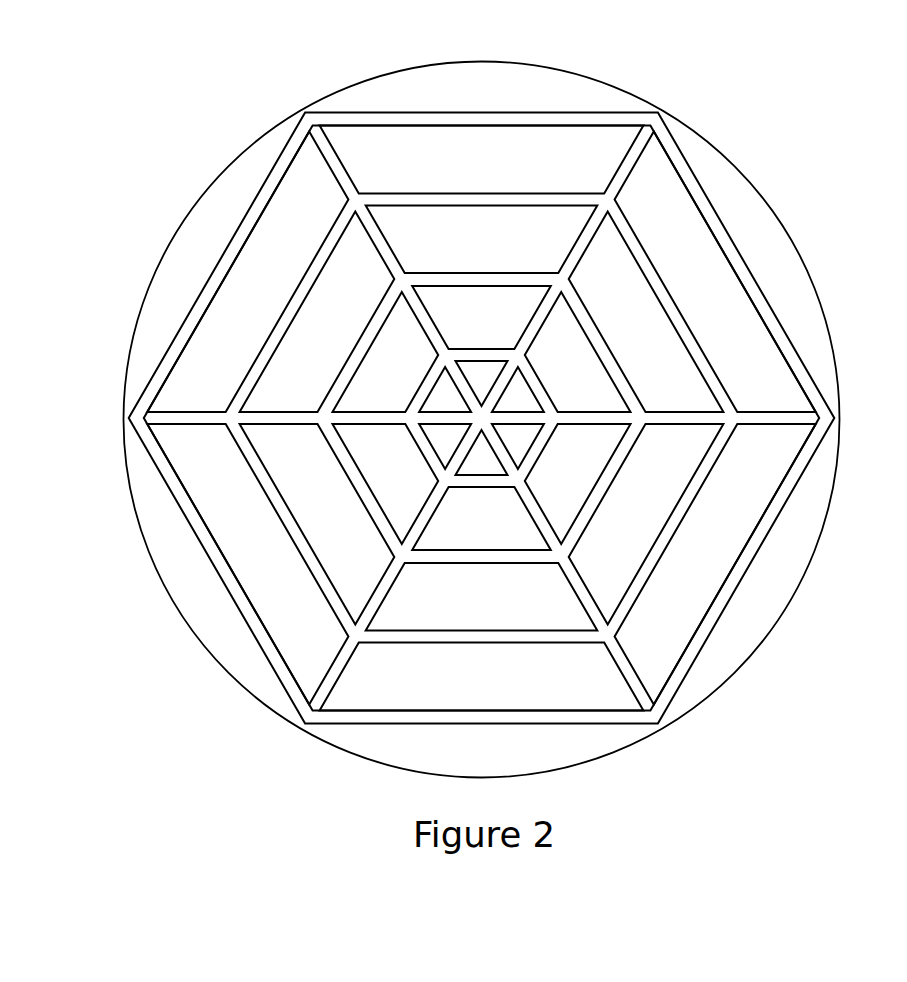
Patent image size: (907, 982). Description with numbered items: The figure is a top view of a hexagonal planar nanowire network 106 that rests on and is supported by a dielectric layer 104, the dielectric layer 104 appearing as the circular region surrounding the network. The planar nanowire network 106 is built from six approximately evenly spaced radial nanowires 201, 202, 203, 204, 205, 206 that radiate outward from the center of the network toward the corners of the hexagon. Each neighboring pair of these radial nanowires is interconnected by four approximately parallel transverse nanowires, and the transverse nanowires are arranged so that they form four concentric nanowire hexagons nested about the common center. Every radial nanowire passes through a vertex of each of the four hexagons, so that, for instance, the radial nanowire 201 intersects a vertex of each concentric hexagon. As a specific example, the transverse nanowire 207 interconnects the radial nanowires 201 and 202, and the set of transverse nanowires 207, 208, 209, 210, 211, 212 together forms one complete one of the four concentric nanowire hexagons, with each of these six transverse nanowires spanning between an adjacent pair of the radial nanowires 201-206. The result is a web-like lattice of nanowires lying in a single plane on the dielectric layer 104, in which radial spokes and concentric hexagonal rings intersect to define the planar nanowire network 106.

The dielectric layer 104 is at (779, 607).
The planar nanowire network 106 is at (540, 97).
The radial nanowire 201 is at (573, 260).
The radial nanowire 202 is at (663, 418).
The radial nanowire 203 is at (588, 597).
The radial nanowire 204 is at (387, 590).
The radial nanowire 205 is at (297, 415).
The radial nanowire 206 is at (380, 247).
The transverse nanowire 207 is at (657, 288).
The transverse nanowire 208 is at (672, 537).
The transverse nanowire 209 is at (500, 635).
The transverse nanowire 210 is at (302, 538).
The transverse nanowire 211 is at (277, 350).
The transverse nanowire 212 is at (423, 192).